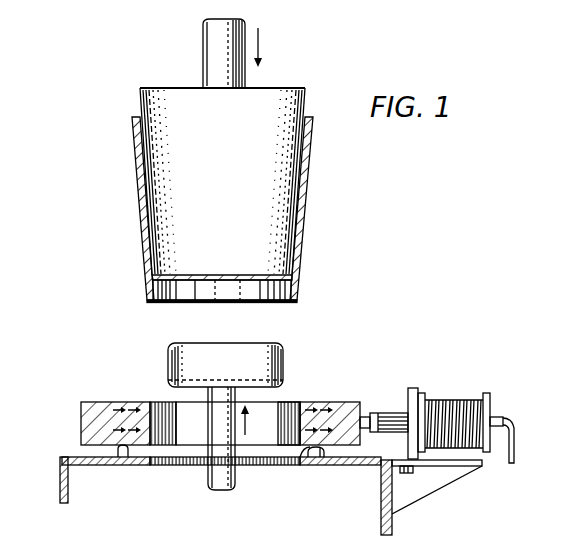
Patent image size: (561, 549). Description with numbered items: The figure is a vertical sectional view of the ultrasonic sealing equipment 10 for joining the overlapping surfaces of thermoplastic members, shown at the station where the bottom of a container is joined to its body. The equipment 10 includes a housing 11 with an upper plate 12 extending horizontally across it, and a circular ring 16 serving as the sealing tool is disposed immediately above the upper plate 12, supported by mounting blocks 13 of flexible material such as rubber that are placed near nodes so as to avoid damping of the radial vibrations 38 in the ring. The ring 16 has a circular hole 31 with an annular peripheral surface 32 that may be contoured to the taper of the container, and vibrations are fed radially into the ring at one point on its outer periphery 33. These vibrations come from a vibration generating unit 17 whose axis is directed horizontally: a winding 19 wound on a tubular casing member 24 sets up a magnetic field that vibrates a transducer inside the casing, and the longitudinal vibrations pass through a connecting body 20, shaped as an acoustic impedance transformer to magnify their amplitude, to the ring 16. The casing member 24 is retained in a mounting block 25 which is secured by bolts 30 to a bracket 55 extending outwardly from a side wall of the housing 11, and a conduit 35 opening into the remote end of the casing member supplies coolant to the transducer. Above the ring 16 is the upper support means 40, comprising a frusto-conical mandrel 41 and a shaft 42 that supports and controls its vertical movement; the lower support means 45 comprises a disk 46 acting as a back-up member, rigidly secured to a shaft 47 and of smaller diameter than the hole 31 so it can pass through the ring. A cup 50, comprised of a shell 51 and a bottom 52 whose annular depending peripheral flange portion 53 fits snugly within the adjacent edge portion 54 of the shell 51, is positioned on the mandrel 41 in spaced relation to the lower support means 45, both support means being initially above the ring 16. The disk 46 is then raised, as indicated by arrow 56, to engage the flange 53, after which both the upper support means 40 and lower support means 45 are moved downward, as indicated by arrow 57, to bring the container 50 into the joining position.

The sealing equipment 10 is at (66, 362).
The housing 11 is at (60, 490).
The upper plate 12 is at (195, 475).
The mounting blocks 13 is at (118, 452).
The circular ring 16 is at (352, 404).
The vibration generating unit 17 is at (459, 400).
The winding 19 is at (460, 400).
The connecting body 20 is at (396, 433).
The tubular casing member 24 is at (494, 440).
The mounting block 25 is at (410, 388).
The bolts 30 is at (431, 497).
The circular hole 31 is at (172, 404).
The annular peripheral surface 32 is at (150, 400).
The outer periphery 33 is at (362, 406).
The conduit 35 is at (519, 453).
The radial vibrations 38 is at (312, 458).
The upper support means 40 is at (196, 169).
The mandrel 41 is at (162, 189).
The shaft 42 is at (248, 79).
The lower support means 45 is at (285, 346).
The disk 46 is at (284, 372).
The shaft 47 is at (206, 482).
The cup 50 is at (216, 220).
The shell 51 is at (313, 153).
The bottom 52 is at (232, 284).
The annular depending peripheral flange portion 53 is at (165, 285).
The edge portion 54 is at (153, 295).
The bracket 55 is at (445, 484).
The arrow 56 is at (245, 428).
The arrow 57 is at (262, 40).